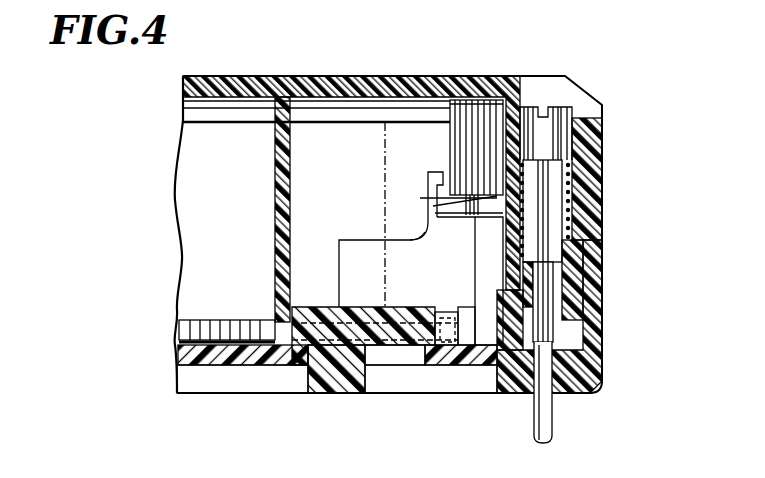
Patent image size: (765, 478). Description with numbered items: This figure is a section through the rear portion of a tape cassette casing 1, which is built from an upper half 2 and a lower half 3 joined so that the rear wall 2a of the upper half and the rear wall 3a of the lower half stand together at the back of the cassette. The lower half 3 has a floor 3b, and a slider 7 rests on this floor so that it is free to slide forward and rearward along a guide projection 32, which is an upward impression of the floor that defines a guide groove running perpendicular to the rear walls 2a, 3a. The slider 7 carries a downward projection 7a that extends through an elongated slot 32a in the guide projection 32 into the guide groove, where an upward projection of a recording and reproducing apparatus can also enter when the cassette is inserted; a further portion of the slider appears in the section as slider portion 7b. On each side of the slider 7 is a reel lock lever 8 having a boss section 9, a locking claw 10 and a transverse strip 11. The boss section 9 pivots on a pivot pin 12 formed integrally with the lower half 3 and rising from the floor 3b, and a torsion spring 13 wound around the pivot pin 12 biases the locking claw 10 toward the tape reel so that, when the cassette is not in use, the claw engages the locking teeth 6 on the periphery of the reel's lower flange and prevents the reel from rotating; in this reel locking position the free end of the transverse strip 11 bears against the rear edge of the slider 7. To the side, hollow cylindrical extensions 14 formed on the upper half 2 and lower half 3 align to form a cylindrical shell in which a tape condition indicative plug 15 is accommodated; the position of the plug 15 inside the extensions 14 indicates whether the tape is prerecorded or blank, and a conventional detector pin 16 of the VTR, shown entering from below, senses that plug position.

The tape cassette casing 1 is at (523, 77).
The upper half 2 is at (425, 87).
The rear wall of the upper half 2a is at (598, 129).
The lower half 3 is at (291, 381).
The rear wall of the lower half 3a is at (599, 306).
The floor 3b is at (240, 381).
The locking teeth 6 is at (241, 334).
The slider 7 is at (331, 303).
The downward projection 7a is at (445, 338).
The block leg 7b is at (350, 379).
The reel lock lever 8 is at (401, 236).
The boss section 9 is at (470, 110).
The locking claw 10 is at (351, 240).
The transverse strip 11 is at (450, 318).
The pivot pin 12 is at (425, 207).
The torsion spring 13 is at (433, 206).
The hollow cylindrical extension 14 is at (510, 263).
The tape condition indicative plug 15 is at (553, 182).
The detector pin 16 is at (549, 414).
The guide projection 32 is at (190, 352).
The elongated slot 32a is at (418, 351).